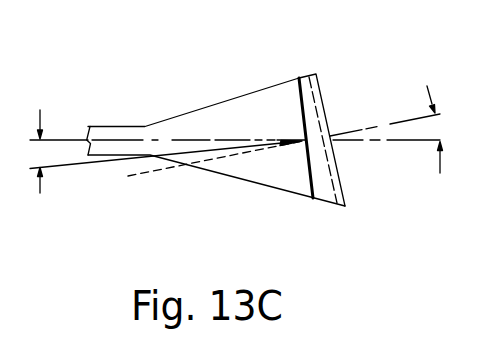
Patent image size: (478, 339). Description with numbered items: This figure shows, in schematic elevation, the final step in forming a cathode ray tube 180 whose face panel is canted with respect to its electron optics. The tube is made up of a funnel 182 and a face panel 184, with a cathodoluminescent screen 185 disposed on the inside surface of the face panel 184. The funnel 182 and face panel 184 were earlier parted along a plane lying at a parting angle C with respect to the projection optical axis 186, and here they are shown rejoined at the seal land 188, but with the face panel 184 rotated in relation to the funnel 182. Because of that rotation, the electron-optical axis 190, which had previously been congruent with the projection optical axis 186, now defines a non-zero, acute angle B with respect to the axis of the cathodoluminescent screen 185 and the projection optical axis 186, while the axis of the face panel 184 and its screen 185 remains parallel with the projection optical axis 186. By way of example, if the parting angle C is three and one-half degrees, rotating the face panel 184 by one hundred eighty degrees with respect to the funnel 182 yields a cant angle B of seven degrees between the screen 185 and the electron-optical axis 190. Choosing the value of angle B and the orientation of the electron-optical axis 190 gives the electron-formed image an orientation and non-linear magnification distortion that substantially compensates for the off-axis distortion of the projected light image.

The cathode ray tube 180 is at (188, 178).
The funnel 182 is at (195, 111).
The face panel 184 is at (305, 77).
The cathodoluminescent screen 185 is at (335, 199).
The projection optical axis 186 is at (368, 128).
The seal land 188 is at (308, 171).
The electron-optical axis 190 is at (72, 140).
The angle B is at (432, 120).
The parting angle C is at (166, 165).